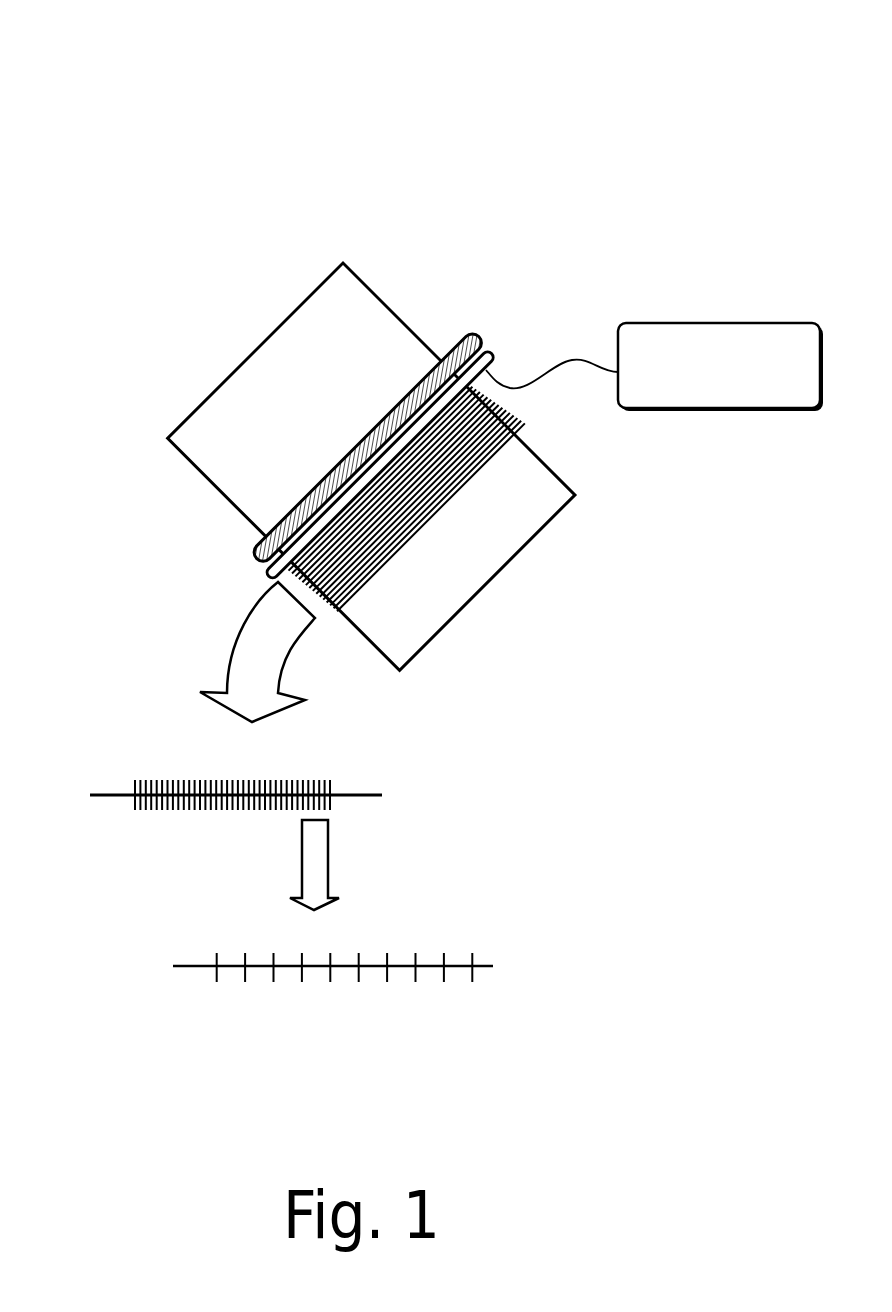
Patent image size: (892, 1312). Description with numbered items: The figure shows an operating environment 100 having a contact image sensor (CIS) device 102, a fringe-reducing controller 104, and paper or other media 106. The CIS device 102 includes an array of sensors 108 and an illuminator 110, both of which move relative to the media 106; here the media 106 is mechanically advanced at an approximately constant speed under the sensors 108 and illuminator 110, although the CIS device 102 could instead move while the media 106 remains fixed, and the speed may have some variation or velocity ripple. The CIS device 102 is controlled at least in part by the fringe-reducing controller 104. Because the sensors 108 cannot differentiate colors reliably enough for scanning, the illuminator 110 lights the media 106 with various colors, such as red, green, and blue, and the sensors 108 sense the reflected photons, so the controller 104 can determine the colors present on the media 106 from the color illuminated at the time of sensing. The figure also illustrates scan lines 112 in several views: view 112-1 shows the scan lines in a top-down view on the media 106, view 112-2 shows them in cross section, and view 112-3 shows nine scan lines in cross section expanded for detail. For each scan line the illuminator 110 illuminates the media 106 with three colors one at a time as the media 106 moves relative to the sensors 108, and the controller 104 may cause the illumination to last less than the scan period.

The operating environment 100 is at (718, 70).
The contact image sensor (CIS) device 102 is at (371, 438).
The fringe-reducing controller 104 is at (701, 401).
The media 106 is at (353, 297).
The array of sensors 108 is at (487, 357).
The illuminator 110 is at (474, 336).
The scan lines 112 is at (420, 938).
The top-down view of scan lines 112-1 is at (537, 435).
The cross-sectional view of scan lines 112-2 is at (172, 748).
The expanded cross-sectional view of scan lines 112-3 is at (223, 928).